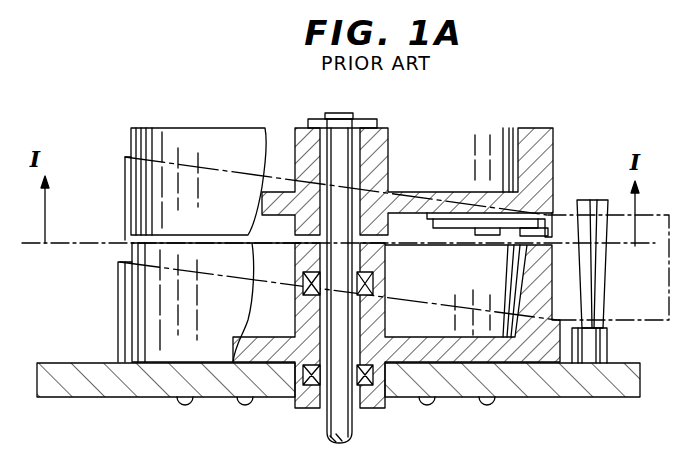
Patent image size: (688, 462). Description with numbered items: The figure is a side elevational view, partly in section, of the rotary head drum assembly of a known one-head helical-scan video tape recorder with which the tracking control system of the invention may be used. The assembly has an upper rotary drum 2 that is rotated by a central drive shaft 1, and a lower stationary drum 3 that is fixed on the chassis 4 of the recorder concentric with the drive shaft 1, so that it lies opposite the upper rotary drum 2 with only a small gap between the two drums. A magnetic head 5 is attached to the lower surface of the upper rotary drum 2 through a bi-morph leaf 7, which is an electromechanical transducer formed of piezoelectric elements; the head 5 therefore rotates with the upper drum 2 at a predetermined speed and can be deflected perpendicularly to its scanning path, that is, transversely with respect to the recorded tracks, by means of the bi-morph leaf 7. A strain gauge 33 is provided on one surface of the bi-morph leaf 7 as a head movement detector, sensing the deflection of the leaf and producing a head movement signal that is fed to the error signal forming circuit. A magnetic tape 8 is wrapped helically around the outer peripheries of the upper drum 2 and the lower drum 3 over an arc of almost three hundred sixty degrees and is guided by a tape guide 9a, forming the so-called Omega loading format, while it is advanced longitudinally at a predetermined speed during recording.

The drive shaft 1 is at (353, 430).
The upper rotary drum 2 is at (553, 140).
The lower stationary drum 3 is at (537, 352).
The chassis 4 is at (628, 396).
The magnetic head 5 is at (548, 215).
The bi-morph leaf 7 is at (487, 227).
The magnetic tape 8 is at (129, 183).
The tape guide 9a is at (606, 287).
The strain gauge 33 is at (492, 236).